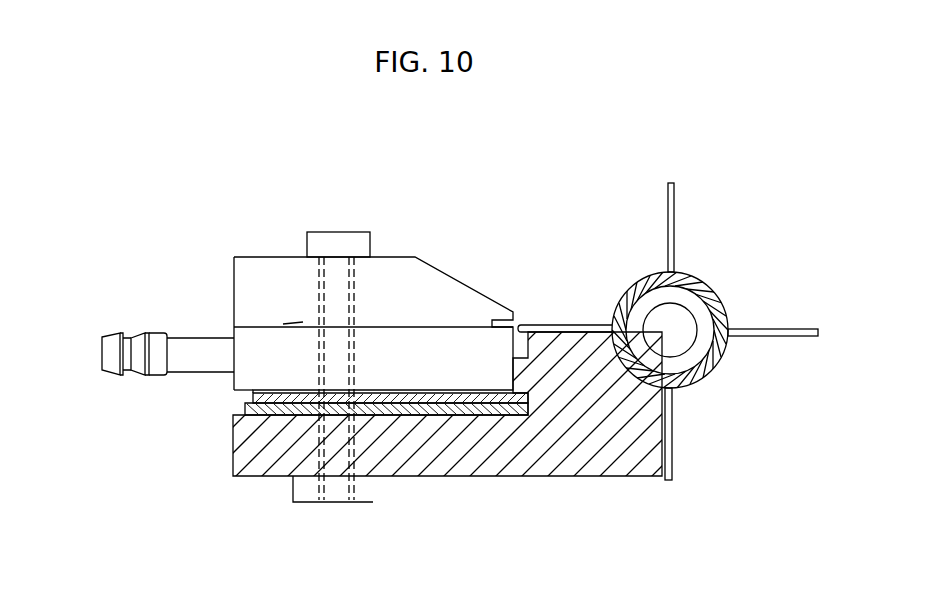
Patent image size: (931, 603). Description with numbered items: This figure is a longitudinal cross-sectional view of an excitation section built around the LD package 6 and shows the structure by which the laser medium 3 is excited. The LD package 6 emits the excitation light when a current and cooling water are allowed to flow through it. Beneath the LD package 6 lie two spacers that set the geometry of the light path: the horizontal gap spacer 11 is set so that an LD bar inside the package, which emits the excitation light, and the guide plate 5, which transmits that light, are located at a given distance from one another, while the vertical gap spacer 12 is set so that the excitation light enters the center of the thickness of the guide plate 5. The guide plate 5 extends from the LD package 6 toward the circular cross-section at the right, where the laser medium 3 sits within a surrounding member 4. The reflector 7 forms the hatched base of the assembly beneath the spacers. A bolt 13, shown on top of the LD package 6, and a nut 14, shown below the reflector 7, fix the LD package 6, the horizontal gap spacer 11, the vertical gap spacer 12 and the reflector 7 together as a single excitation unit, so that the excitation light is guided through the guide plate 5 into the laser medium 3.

The laser medium 3 is at (690, 348).
The cylindrical member 4 is at (694, 376).
The guide plate 5 is at (560, 325).
The LD package 6 is at (392, 257).
The reflector 7 is at (565, 478).
The horizontal gap spacer 11 is at (447, 405).
The vertical gap spacer 12 is at (381, 418).
The bolt 13 is at (305, 236).
The nut 14 is at (292, 490).